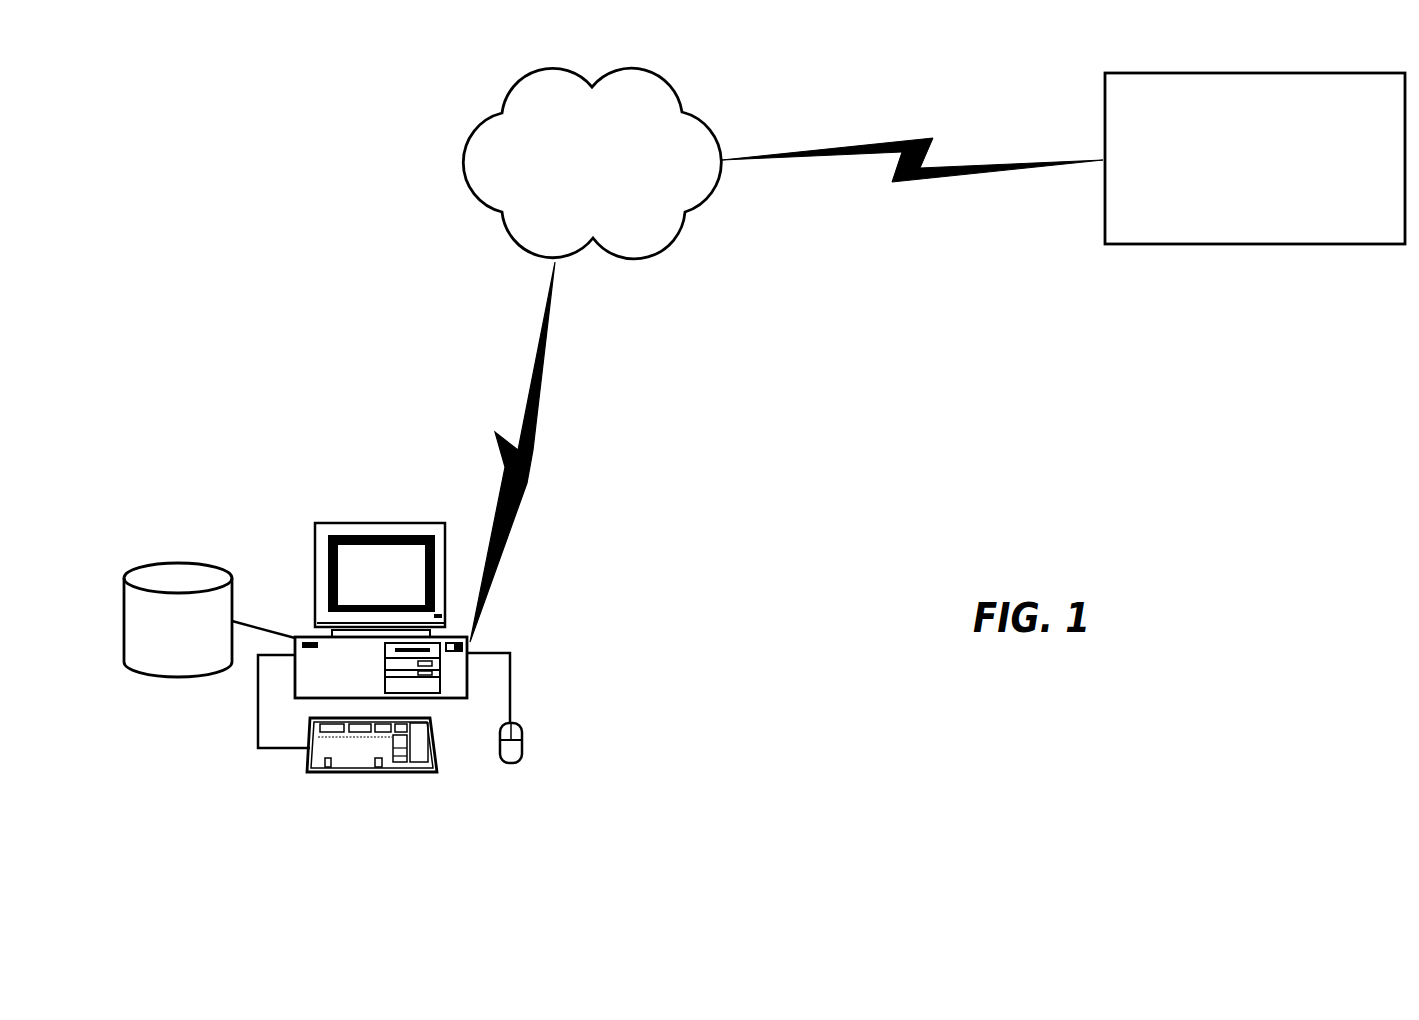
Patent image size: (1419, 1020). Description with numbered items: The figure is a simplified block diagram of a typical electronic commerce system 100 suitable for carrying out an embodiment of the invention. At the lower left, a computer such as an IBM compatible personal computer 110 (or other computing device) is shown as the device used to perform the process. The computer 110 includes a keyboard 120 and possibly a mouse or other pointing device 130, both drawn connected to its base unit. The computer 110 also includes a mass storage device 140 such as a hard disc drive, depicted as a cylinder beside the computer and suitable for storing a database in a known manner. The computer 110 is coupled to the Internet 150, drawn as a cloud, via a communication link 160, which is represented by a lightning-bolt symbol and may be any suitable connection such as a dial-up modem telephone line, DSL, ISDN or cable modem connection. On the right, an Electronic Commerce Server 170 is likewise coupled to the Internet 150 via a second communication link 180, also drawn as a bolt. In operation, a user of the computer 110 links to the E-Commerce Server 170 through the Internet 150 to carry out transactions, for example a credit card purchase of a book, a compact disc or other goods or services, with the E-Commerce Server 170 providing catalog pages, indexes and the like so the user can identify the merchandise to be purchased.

The system 100 is at (942, 438).
The personal computer 110 is at (382, 525).
The keyboard 120 is at (320, 773).
The mouse or other pointing device 130 is at (522, 735).
The mass storage device 140 is at (145, 578).
The Internet 150 is at (630, 259).
The communication link 160 is at (530, 453).
The Electronic Commerce Server 170 is at (1212, 245).
The communication link 180 is at (912, 144).